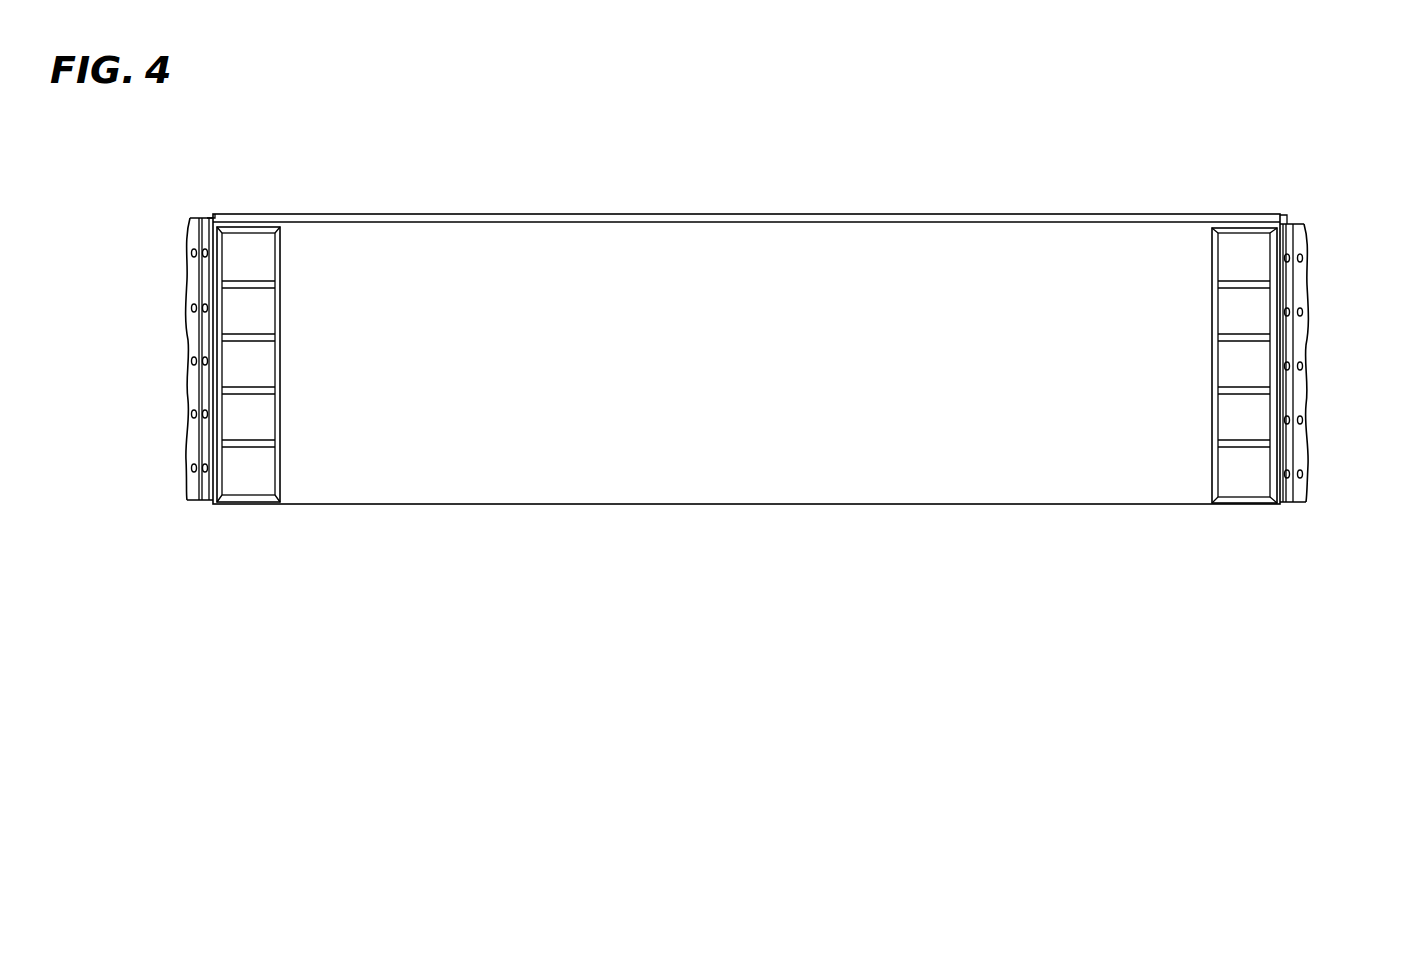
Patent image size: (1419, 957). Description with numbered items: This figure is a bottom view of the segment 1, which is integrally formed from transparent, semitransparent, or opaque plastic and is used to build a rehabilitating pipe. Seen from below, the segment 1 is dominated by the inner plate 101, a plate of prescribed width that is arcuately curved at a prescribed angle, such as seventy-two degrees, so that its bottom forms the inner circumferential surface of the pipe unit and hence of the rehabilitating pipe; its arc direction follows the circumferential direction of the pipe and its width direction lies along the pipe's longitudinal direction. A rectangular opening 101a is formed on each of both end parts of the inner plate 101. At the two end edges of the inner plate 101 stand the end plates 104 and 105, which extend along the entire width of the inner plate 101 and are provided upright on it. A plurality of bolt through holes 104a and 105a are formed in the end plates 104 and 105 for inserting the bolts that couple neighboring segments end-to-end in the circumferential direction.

The segment 1 is at (1035, 188).
The inner plate 101 is at (777, 264).
The rectangular opening 101a is at (271, 414).
The end plate 104 is at (189, 452).
The bolt through holes 104a is at (194, 414).
The end plate 105 is at (1301, 448).
The bolt through holes 105a is at (1288, 312).